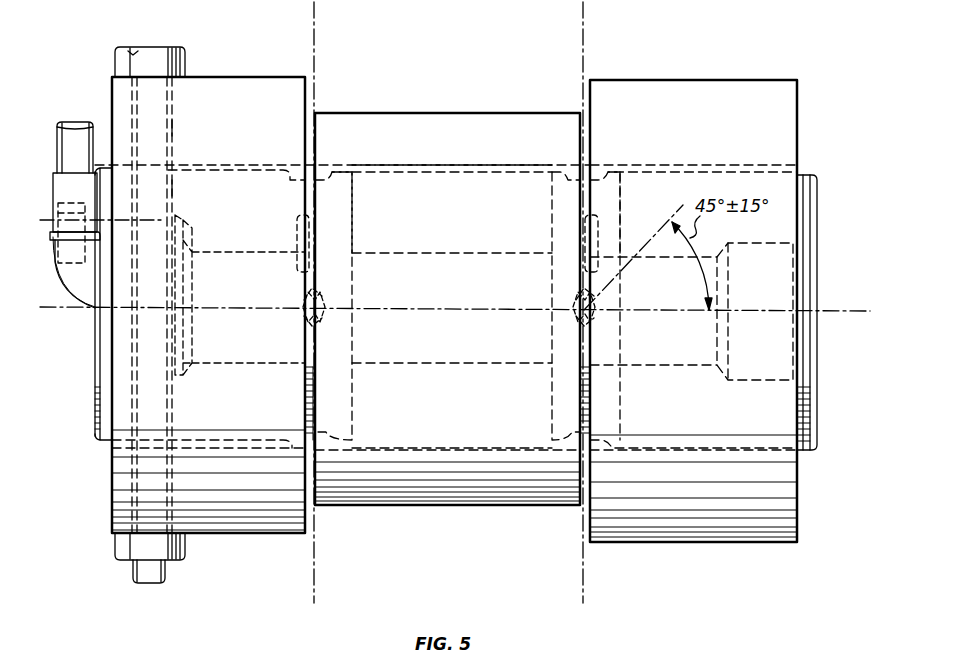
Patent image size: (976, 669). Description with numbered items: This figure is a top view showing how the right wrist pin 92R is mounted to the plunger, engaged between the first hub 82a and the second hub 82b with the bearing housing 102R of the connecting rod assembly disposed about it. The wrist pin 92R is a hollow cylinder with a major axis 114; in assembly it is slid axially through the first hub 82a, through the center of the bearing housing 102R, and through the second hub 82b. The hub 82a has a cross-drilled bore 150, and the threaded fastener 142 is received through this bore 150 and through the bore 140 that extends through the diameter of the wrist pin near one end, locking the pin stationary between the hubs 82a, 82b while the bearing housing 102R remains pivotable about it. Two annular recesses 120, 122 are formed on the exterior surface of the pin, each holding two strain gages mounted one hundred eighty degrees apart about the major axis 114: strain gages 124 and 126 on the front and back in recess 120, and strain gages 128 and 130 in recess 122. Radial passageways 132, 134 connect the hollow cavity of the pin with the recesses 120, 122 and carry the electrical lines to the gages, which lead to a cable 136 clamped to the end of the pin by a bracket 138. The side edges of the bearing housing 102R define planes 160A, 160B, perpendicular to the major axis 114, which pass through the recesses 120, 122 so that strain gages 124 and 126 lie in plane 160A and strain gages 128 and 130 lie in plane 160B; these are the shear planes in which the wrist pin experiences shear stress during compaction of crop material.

The first hub 82a is at (226, 80).
The second hub 82b is at (706, 82).
The right wrist pin 92R is at (484, 176).
The bearing housing 102R is at (526, 113).
The major axis 114 is at (854, 311).
The annular recess 120 is at (342, 164).
The annular recess 122 is at (612, 166).
The strain gage 124 is at (338, 300).
The strain gage 126 is at (300, 298).
The strain gage 128 is at (600, 300).
The strain gage 130 is at (572, 298).
The radial passageway 132 is at (297, 235).
The radial passageway 134 is at (616, 232).
The cable 136 is at (85, 290).
The bracket 138 is at (183, 214).
The bore 140 is at (173, 190).
The fastener 142 is at (162, 48).
The bore 150 is at (173, 128).
The plane 160A is at (316, 46).
The plane 160B is at (585, 46).